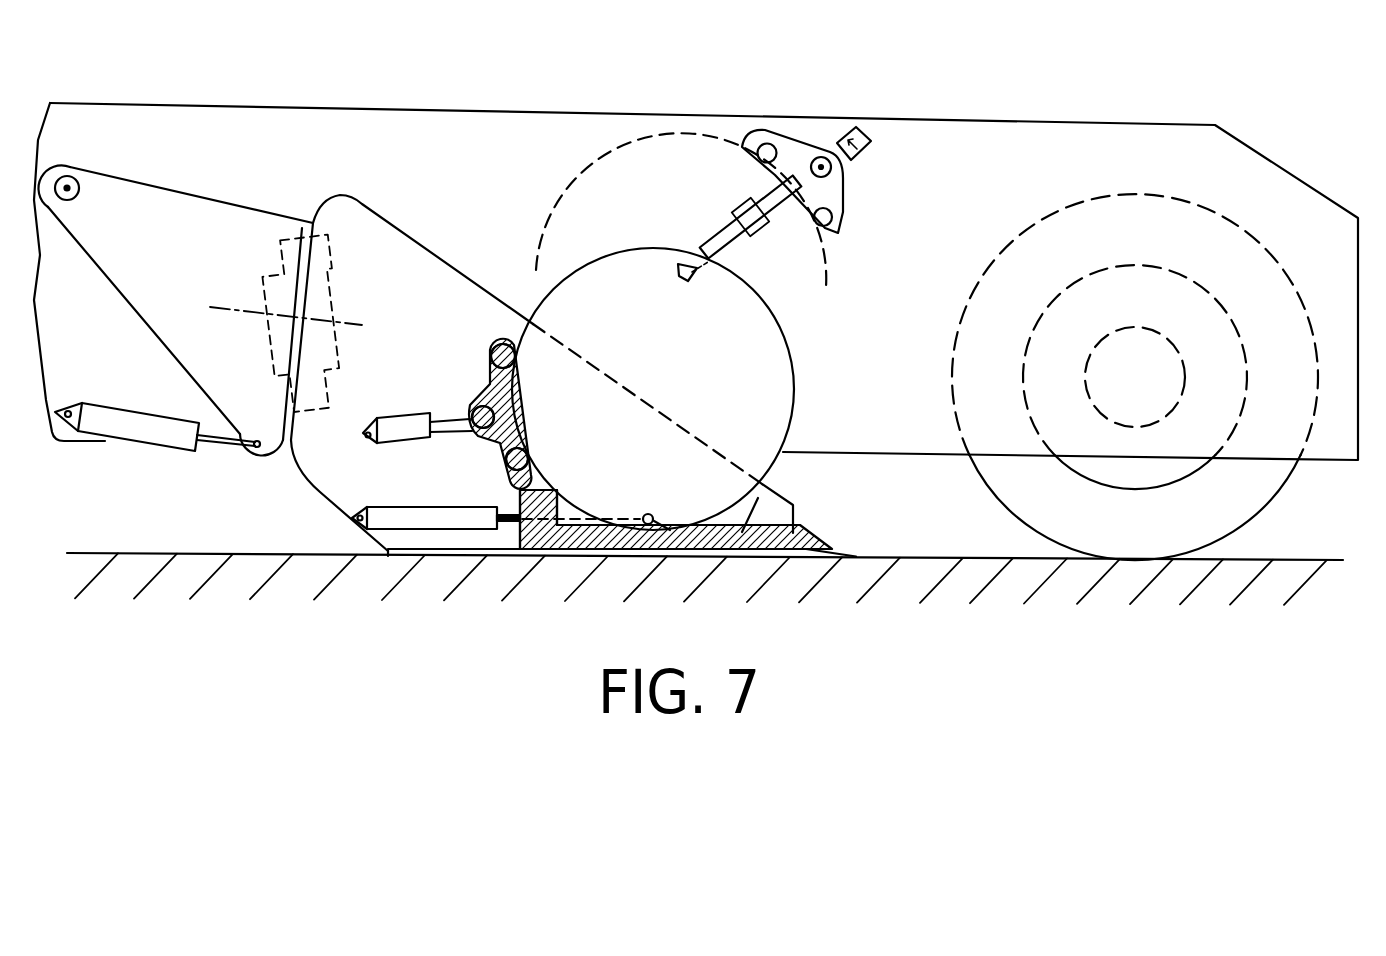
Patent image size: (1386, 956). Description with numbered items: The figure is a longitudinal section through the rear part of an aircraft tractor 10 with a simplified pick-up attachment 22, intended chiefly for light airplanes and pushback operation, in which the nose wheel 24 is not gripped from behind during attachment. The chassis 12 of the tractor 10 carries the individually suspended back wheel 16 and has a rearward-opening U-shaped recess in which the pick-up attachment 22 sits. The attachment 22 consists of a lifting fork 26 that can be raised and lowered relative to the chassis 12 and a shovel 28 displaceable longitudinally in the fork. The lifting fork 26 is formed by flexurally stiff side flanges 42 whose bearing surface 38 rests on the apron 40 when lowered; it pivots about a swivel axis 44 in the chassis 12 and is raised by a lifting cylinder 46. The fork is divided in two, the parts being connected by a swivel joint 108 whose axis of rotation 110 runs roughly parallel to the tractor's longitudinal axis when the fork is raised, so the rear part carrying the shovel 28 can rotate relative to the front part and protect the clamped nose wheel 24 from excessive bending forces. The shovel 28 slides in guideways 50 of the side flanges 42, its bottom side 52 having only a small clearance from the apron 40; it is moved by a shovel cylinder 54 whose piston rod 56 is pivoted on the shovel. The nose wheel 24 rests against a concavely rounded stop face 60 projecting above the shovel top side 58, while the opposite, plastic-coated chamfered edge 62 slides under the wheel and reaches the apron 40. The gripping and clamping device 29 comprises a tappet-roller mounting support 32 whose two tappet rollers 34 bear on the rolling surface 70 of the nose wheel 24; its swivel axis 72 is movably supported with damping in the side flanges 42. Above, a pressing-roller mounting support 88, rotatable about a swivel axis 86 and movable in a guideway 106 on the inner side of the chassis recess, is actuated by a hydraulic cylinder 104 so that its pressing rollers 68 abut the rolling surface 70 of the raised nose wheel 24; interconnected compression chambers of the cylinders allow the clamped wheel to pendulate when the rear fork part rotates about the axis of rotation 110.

The aircraft tractor 10 is at (985, 107).
The chassis 12 is at (1131, 108).
The back wheel 16 is at (1247, 513).
The pick-up attachment 22 is at (410, 212).
The nose wheel 24 is at (773, 360).
The lifting fork 26 is at (329, 220).
The shovel 28 is at (712, 543).
The gripping and clamping device 29 is at (737, 182).
The tappet-roller mounting support 32 is at (489, 365).
The tappet roller 34 is at (517, 358).
The bearing surface 38 is at (807, 540).
The apron 40 is at (1326, 541).
The side flange 42 is at (455, 280).
The swivel axis 44 is at (79, 190).
The lifting cylinder 46 is at (158, 433).
The guideway 50 is at (497, 538).
The bottom side 52 is at (580, 549).
The shovel cylinder 54 is at (424, 508).
The piston rod 56 is at (624, 513).
The shovel top side 58 is at (772, 495).
The stop face 60 is at (577, 514).
The chamfered edge 62 is at (832, 542).
The pressing roller 68 is at (766, 143).
The rolling surface 70 is at (650, 248).
The swivel axis 72 is at (470, 402).
The swivel axis 86 is at (824, 156).
The pressing-roller mounting support 88 is at (833, 194).
The hydraulic cylinder 104 is at (732, 235).
The guideway 106 is at (866, 147).
The swivel joint 108 is at (266, 278).
The axis of rotation 110 is at (227, 307).